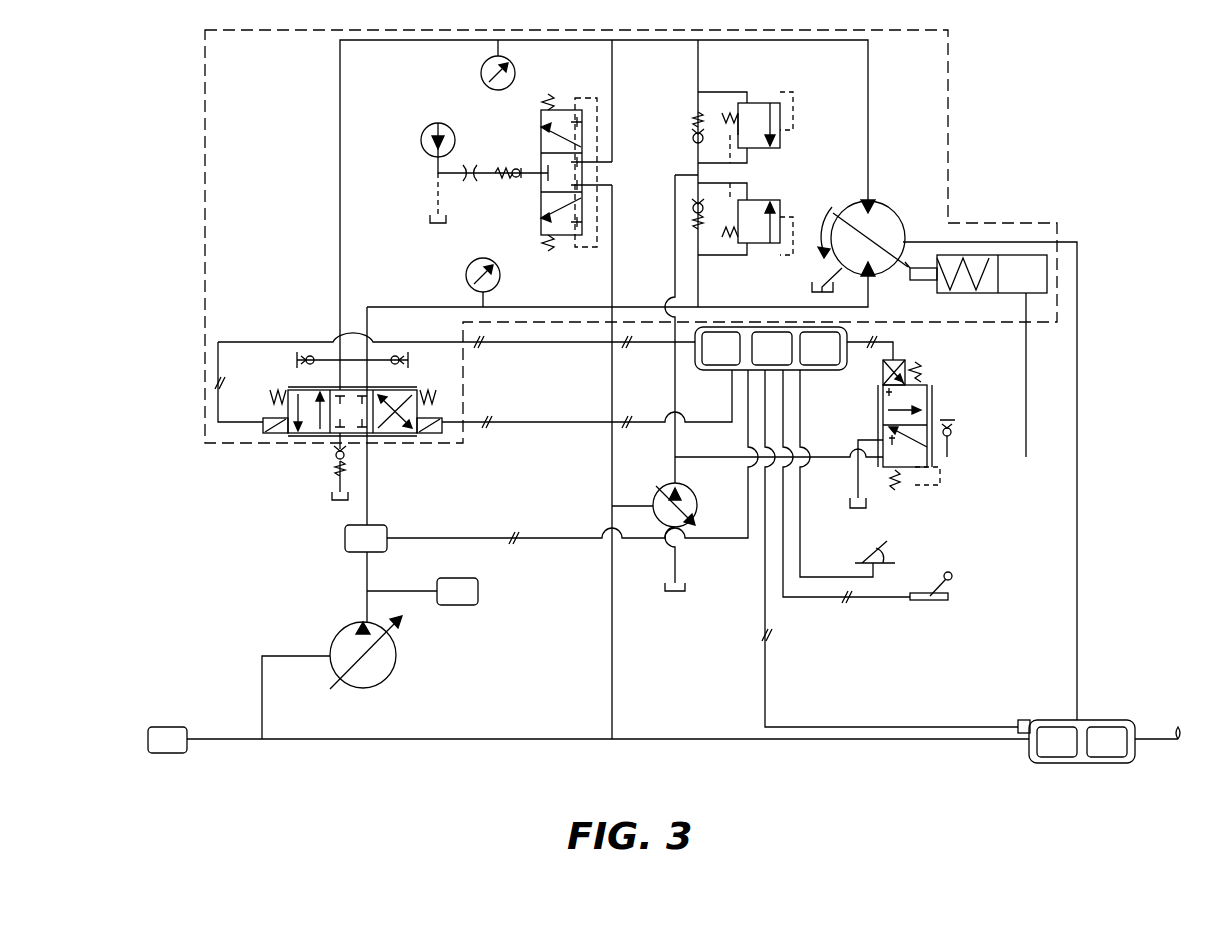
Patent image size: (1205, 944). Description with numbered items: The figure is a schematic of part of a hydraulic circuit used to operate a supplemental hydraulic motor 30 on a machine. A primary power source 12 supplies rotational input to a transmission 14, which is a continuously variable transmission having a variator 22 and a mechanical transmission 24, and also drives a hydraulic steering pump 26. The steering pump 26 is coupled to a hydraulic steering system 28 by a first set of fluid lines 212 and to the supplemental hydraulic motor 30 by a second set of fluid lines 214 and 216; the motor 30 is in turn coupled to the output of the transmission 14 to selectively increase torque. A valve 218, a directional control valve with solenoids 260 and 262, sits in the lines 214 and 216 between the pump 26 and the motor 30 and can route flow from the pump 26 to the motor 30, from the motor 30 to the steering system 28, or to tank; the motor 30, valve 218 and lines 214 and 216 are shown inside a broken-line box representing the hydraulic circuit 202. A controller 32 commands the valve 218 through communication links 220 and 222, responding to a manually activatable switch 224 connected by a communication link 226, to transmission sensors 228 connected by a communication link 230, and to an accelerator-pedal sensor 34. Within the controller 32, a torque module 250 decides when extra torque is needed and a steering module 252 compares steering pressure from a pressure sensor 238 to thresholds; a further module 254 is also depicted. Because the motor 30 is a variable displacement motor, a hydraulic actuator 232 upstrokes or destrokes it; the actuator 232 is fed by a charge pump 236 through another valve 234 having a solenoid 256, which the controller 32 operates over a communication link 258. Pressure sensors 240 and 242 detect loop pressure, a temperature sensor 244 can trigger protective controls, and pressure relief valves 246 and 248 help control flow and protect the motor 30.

The primary power source 12 is at (167, 740).
The transmission 14 is at (1095, 721).
The variator 22 is at (1057, 742).
The mechanical transmission 24 is at (1107, 742).
The hydraulic steering pump 26 is at (343, 634).
The hydraulic steering system 28 is at (457, 591).
The supplemental hydraulic motor 30 is at (880, 207).
The controller 32 is at (777, 373).
The accelerator-pedal sensor 34 is at (889, 553).
The hydraulic circuit 202 is at (949, 64).
The first set of fluid lines 212 is at (400, 590).
The fluid line 214 is at (374, 306).
The fluid line 216 is at (341, 238).
The valve 218 is at (288, 380).
The communication link 220 is at (578, 420).
The communication link 222 is at (573, 343).
The manually activatable switch 224 is at (930, 604).
The communication link 226 is at (810, 598).
The transmission sensors 228 is at (1024, 718).
The communication link 230 is at (935, 727).
The hydraulic actuator 232 is at (994, 298).
The valve 234 is at (950, 380).
The charge pump 236 is at (680, 486).
The pressure sensor 238 is at (366, 538).
The pressure sensor 240 is at (499, 277).
The pressure sensor 242 is at (481, 74).
The temperature sensor 244 is at (421, 142).
The pressure relief valve 246 is at (762, 200).
The pressure relief valve 248 is at (762, 150).
The torque module 250 is at (820, 348).
The steering module 252 is at (772, 348).
The controller module 254 is at (721, 348).
The solenoid 256 is at (903, 358).
The communication link 258 is at (892, 346).
The solenoid 260 is at (430, 416).
The solenoid 262 is at (268, 427).